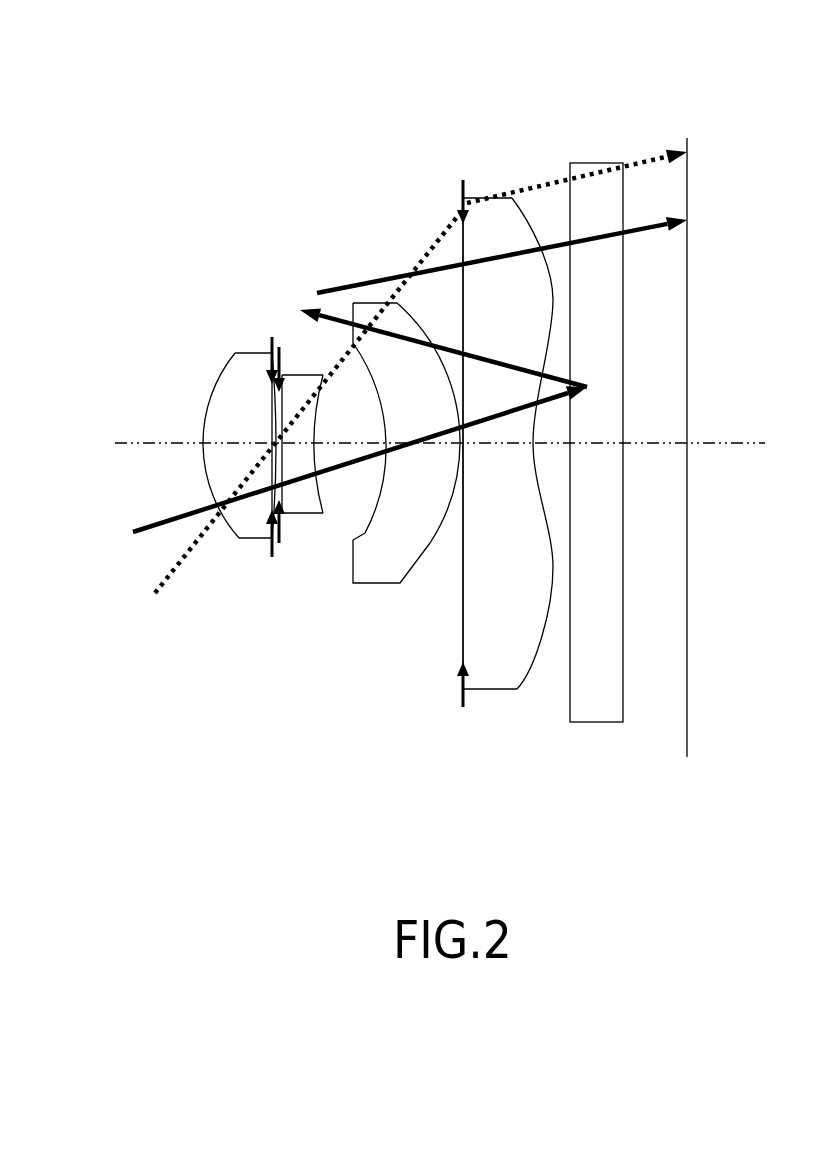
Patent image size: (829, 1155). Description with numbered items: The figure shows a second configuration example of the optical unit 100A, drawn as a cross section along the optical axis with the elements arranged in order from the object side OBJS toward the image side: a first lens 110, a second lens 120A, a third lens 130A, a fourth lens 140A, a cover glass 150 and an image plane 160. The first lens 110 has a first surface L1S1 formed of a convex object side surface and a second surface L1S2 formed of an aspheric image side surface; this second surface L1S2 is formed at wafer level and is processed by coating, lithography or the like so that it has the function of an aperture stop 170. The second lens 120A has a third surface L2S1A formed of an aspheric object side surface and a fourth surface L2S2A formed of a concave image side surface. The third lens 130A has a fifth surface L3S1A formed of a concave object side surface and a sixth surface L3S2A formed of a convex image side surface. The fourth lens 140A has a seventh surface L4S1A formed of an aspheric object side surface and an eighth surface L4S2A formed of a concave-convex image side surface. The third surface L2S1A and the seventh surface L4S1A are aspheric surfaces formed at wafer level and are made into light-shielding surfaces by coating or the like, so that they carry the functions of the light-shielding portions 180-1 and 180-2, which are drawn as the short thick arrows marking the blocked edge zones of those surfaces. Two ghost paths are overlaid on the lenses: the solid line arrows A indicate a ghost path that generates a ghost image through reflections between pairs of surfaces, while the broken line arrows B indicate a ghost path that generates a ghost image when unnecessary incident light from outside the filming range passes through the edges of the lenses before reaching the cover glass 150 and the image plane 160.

The optical unit 100A is at (475, 36).
The first lens 110 is at (171, 417).
The second lens 120A is at (308, 488).
The third lens 130A is at (394, 442).
The fourth lens 140A is at (524, 463).
The cover glass 150 is at (594, 163).
The image plane 160 is at (688, 137).
The aperture stop 170 is at (268, 527).
The light-shielding portion 180-1 is at (278, 525).
The light-shielding portion 180-2 is at (464, 684).
The first surface L1S1 is at (205, 466).
The second surface L1S2 is at (270, 407).
The third surface L2S1A is at (283, 517).
The fourth surface L2S2A is at (323, 516).
The fifth surface L3S1A is at (374, 516).
The sixth surface L3S2A is at (433, 552).
The seventh surface L4S1A is at (464, 598).
The eighth surface L4S2A is at (553, 560).
The solid line arrows A is at (165, 525).
The broken line arrows B is at (167, 577).
The object side OBJS is at (390, 443).